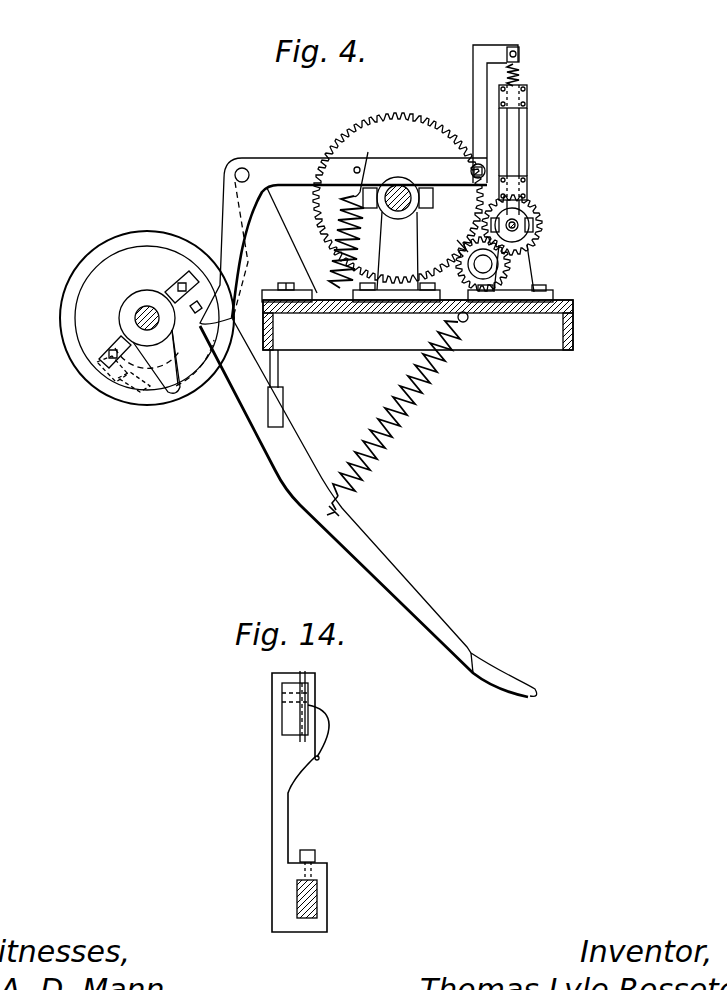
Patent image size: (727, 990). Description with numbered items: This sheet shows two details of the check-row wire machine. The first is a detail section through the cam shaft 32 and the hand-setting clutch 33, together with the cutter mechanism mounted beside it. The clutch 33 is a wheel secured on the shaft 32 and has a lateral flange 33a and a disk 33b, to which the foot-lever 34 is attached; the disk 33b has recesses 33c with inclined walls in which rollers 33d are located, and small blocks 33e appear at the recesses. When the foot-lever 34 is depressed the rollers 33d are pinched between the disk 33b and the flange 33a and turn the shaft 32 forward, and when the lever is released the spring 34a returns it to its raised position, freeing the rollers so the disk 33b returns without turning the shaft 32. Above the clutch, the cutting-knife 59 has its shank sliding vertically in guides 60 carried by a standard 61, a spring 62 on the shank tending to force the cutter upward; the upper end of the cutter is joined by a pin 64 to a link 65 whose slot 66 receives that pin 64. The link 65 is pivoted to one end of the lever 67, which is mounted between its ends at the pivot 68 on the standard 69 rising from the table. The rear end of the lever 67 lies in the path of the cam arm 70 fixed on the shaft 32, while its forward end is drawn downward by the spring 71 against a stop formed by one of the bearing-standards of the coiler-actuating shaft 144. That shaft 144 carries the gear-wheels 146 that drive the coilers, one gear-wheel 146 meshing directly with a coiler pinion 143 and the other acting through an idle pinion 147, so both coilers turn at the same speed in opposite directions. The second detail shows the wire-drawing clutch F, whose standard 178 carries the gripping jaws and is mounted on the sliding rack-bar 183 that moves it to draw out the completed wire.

In FIG. 4, the shaft 32 is at (135, 318).
In FIG. 4, the clutch 33 is at (147, 306).
In FIG. 4, the lateral flange 33a is at (102, 258).
In FIG. 4, the disk 33b is at (149, 331).
In FIG. 4, the recesses 33c is at (97, 375).
In FIG. 4, the rollers 33d is at (108, 380).
In FIG. 4, the small block pin 33e is at (143, 392).
In FIG. 4, the foot-lever 34 is at (385, 567).
In FIG. 4, the spring 34a is at (397, 414).
In FIG. 4, the cutting-knife 59 is at (512, 130).
In FIG. 4, the guides 60 is at (527, 192).
In FIG. 4, the standard 61 is at (527, 150).
In FIG. 4, the spring 62 is at (521, 75).
In FIG. 4, the pin 64 is at (519, 50).
In FIG. 4, the link 65 is at (482, 55).
In FIG. 4, the slot 66 is at (521, 60).
In FIG. 4, the lever 67 is at (290, 162).
In FIG. 4, the pivot 68 is at (246, 168).
In FIG. 4, the standard 69 is at (276, 224).
In FIG. 4, the cam arm 70 is at (173, 388).
In FIG. 4, the spring 71 is at (417, 355).
In FIG. 4, the pinion 143 is at (541, 227).
In FIG. 4, the shaft 144 is at (408, 207).
In FIG. 4, the gear-wheel 146 is at (471, 264).
In FIG. 4, the idle pinion 147 is at (512, 268).
In FIG. 14, the standard 178 is at (288, 783).
In FIG. 14, the sliding rack-bar 183 is at (316, 896).
In FIG. 14, the clutch F is at (336, 732).